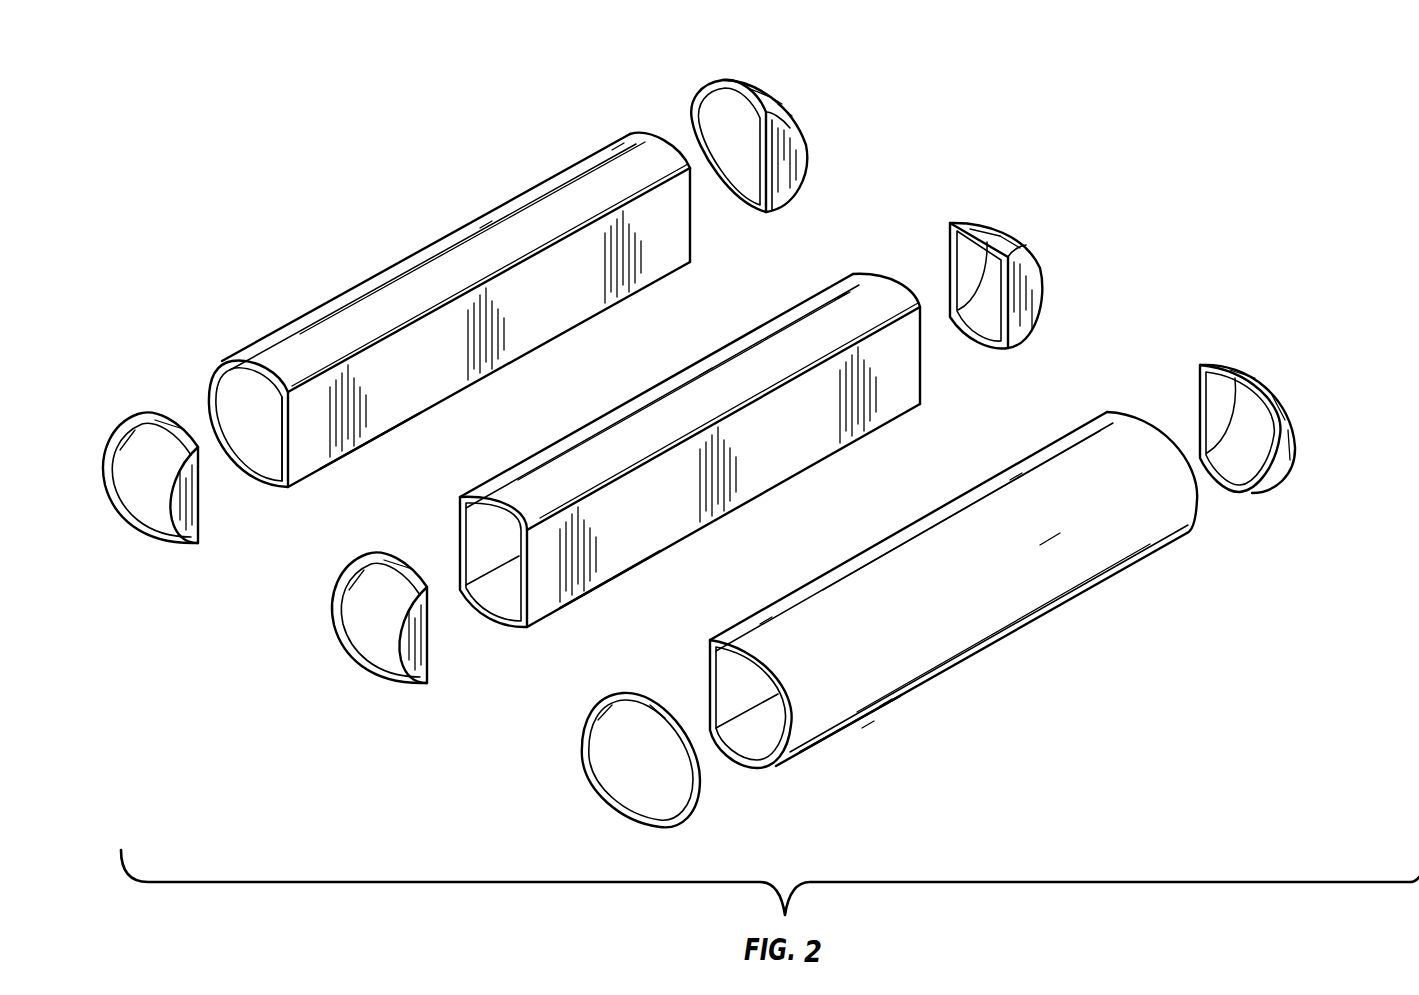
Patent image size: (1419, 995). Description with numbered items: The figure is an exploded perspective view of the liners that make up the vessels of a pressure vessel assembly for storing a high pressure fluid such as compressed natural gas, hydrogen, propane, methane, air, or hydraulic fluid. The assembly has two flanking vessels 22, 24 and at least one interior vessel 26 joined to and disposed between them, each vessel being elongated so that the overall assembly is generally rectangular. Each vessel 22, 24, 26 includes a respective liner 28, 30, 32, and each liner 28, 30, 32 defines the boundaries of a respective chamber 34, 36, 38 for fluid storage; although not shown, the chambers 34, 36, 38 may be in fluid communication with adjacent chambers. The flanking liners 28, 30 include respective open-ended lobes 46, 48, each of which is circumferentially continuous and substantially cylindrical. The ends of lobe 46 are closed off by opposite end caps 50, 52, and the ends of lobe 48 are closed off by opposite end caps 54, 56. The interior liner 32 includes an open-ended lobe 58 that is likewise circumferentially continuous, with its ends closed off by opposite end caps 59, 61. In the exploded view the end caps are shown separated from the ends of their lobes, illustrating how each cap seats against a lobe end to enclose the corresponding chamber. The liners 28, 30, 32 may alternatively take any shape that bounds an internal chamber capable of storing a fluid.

The flanking vessel 22 is at (811, 126).
The flanking vessel 24 is at (1305, 410).
The interior vessel 26 is at (1045, 268).
The liner 28 is at (432, 210).
The liner 30 is at (900, 517).
The interior liner 32 is at (665, 372).
The chamber 34 is at (267, 424).
The chamber 36 is at (750, 704).
The chamber 38 is at (500, 556).
The lobe 46 is at (400, 428).
The lobe 48 is at (880, 705).
The end cap 50 is at (176, 546).
The end cap 52 is at (802, 122).
The end cap 54 is at (676, 826).
The end cap 56 is at (1286, 396).
The lobe 58 is at (648, 558).
The end cap 59 is at (405, 686).
The end cap 61 is at (1036, 259).